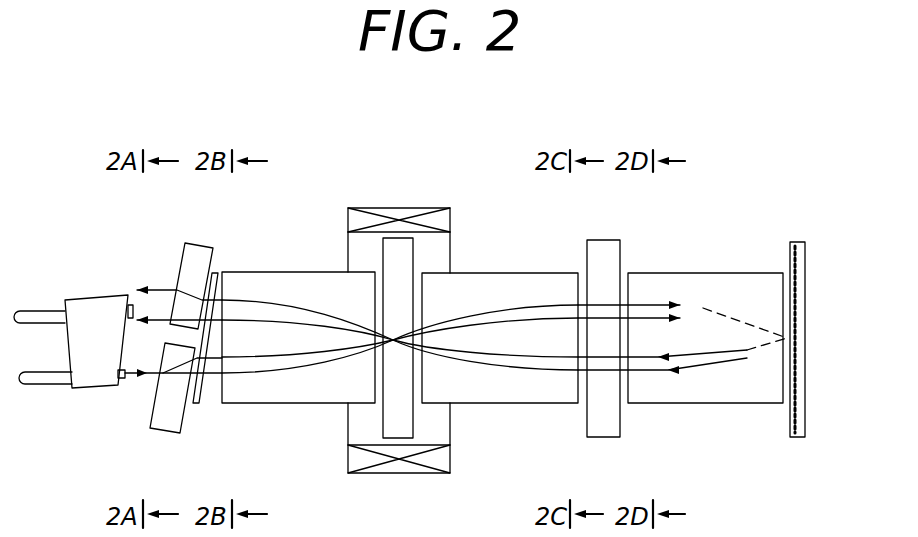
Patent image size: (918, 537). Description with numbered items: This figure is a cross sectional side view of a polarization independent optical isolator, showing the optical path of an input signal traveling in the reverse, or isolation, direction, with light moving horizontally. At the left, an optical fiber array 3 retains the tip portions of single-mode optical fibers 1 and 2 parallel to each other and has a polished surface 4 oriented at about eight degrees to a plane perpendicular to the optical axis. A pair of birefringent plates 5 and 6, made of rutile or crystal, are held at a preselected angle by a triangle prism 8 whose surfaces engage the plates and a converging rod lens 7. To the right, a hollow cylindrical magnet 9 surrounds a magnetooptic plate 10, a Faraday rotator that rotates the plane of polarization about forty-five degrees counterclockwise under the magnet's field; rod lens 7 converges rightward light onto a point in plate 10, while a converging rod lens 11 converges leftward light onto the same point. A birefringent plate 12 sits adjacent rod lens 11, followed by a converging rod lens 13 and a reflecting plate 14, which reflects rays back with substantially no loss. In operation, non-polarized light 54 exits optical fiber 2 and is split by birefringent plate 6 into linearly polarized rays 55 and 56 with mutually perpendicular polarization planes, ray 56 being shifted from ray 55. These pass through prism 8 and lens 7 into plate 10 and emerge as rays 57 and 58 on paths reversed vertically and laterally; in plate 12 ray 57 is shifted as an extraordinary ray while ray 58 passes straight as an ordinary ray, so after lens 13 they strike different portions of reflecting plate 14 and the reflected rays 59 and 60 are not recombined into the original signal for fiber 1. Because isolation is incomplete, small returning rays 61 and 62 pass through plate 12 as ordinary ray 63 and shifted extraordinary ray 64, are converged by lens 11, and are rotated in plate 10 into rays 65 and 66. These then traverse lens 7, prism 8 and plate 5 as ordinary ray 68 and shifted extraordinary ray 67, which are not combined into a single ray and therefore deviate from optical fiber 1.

The single-mode optical fiber 1 is at (46, 312).
The single-mode optical fiber 2 is at (43, 385).
The optical fiber array 3 is at (89, 375).
The polished surface 4 is at (121, 316).
The non-polarized light 54 is at (122, 378).
The birefringent plate 5 is at (200, 256).
The birefringent plate 6 is at (172, 420).
The converging rod lens 7 is at (327, 290).
The triangle prism 8 is at (208, 392).
The hollow cylindrical magnet 9 is at (370, 220).
The magnetooptic plate 10 is at (407, 262).
The converging rod lens 11 is at (477, 283).
The birefringent plate 12 is at (608, 255).
The converging rod lens 13 is at (768, 288).
The reflecting plate 14 is at (800, 238).
The linearly polarized ray 55 is at (253, 372).
The linearly polarized ray 56 is at (290, 360).
The linearly polarized ray 57 is at (513, 306).
The linearly polarized ray 58 is at (548, 314).
The linearly polarized ray 59 is at (638, 305).
The linearly polarized ray 60 is at (660, 319).
The linearly polarized ray 61 is at (645, 372).
The linearly polarized ray 62 is at (690, 356).
The ordinary ray 63 is at (547, 372).
The extraordinary ray 64 is at (517, 364).
The linearly polarized ray 65 is at (287, 307).
The linearly polarized ray 66 is at (245, 308).
The extraordinary ray 67 is at (159, 289).
The ordinary ray 68 is at (160, 319).